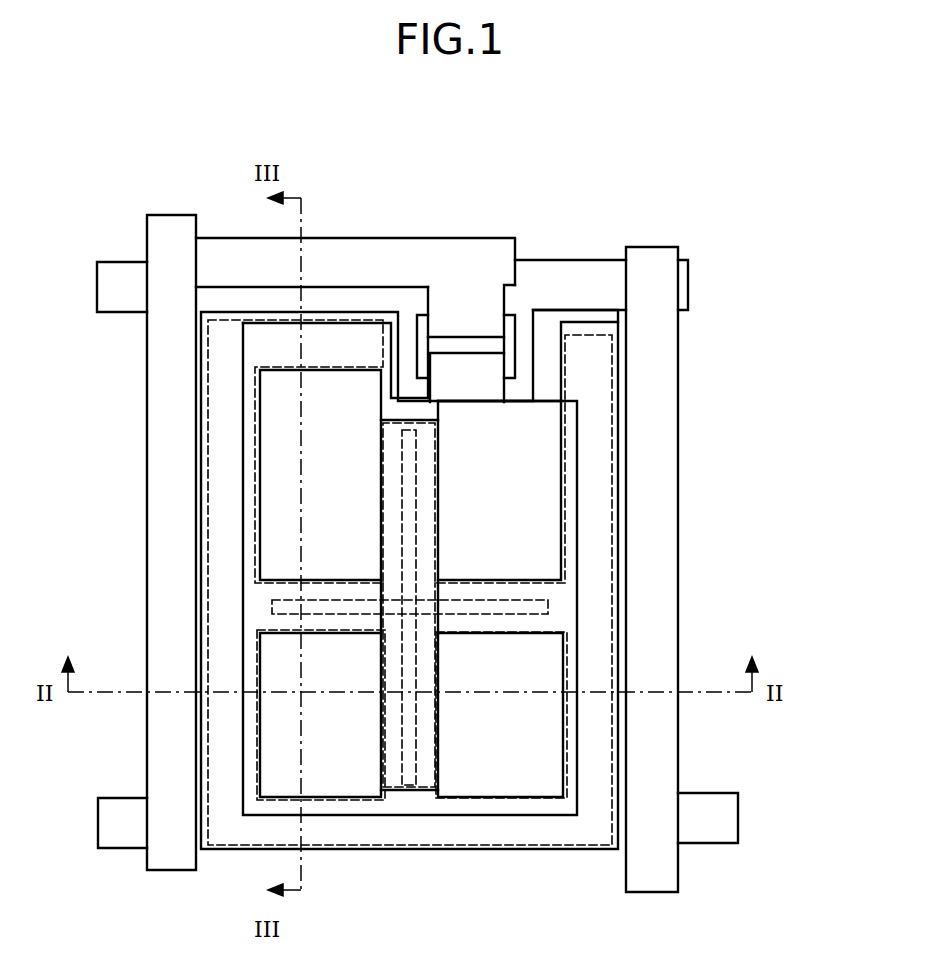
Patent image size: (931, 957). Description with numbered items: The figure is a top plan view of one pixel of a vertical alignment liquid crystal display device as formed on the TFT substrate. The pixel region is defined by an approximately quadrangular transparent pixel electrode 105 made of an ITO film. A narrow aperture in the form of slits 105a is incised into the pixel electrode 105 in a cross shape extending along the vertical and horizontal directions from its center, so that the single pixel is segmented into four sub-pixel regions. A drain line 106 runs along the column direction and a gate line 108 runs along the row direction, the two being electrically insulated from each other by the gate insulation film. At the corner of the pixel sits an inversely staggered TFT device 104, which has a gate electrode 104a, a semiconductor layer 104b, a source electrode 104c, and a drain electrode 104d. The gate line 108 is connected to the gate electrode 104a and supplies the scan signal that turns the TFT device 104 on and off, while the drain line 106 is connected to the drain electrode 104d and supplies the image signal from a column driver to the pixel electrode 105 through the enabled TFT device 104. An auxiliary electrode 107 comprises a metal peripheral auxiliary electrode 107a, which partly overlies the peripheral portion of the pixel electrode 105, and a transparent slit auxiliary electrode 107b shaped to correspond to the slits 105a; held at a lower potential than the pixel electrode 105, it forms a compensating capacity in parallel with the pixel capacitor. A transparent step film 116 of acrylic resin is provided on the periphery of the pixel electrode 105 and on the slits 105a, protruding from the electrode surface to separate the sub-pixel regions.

The TFT device 104 is at (570, 272).
The gate electrode 104a is at (520, 348).
The semiconductor layer 104b is at (423, 347).
The source electrode 104c is at (478, 373).
The drain electrode 104d is at (467, 300).
The pixel electrode 105 is at (525, 487).
The slit 105a is at (408, 517).
The drain line 106 is at (165, 586).
The auxiliary electrode 107 is at (624, 655).
The peripheral auxiliary electrode 107a is at (593, 750).
The slit auxiliary electrode 107b is at (427, 755).
The gate line 108 is at (593, 272).
The transparent step film 116 is at (595, 318).